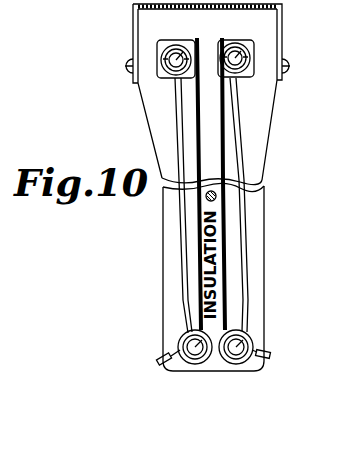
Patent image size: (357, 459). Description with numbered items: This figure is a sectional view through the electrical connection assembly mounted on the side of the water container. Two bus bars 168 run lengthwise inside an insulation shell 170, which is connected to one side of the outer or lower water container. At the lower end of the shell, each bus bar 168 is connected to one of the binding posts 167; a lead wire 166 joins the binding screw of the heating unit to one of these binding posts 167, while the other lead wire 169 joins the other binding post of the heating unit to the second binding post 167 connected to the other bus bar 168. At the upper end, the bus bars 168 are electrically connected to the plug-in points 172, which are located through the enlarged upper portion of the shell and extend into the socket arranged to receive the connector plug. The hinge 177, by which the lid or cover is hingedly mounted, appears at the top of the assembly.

The lead wire 166 is at (271, 353).
The binding posts 167 is at (238, 343).
The bus bars 168 is at (187, 141).
The lead wire 169 is at (158, 355).
The insulation shell 170 is at (263, 231).
The plug-in points 172 is at (220, 42).
The hinge 177 is at (133, 35).